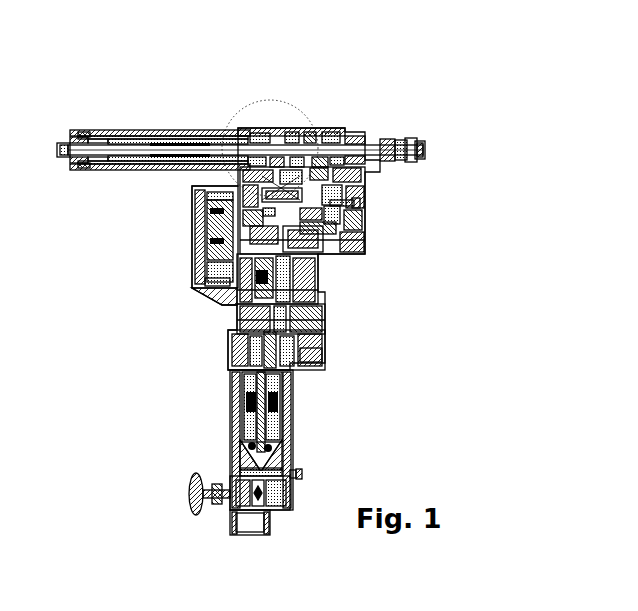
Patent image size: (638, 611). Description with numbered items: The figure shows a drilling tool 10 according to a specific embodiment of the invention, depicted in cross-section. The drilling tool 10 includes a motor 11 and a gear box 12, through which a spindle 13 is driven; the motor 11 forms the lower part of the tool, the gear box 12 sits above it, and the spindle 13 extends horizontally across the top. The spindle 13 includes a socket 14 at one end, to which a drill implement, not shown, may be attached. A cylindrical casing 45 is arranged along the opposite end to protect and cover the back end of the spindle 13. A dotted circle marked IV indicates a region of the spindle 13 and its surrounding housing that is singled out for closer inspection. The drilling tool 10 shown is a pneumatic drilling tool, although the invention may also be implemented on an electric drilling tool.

The drilling tool 10 is at (200, 68).
The motor 11 is at (318, 420).
The gear box 12 is at (340, 270).
The spindle 13 is at (346, 152).
The socket 14 is at (418, 140).
The cylindrical casing 45 is at (127, 128).
The detail region IV is at (272, 100).